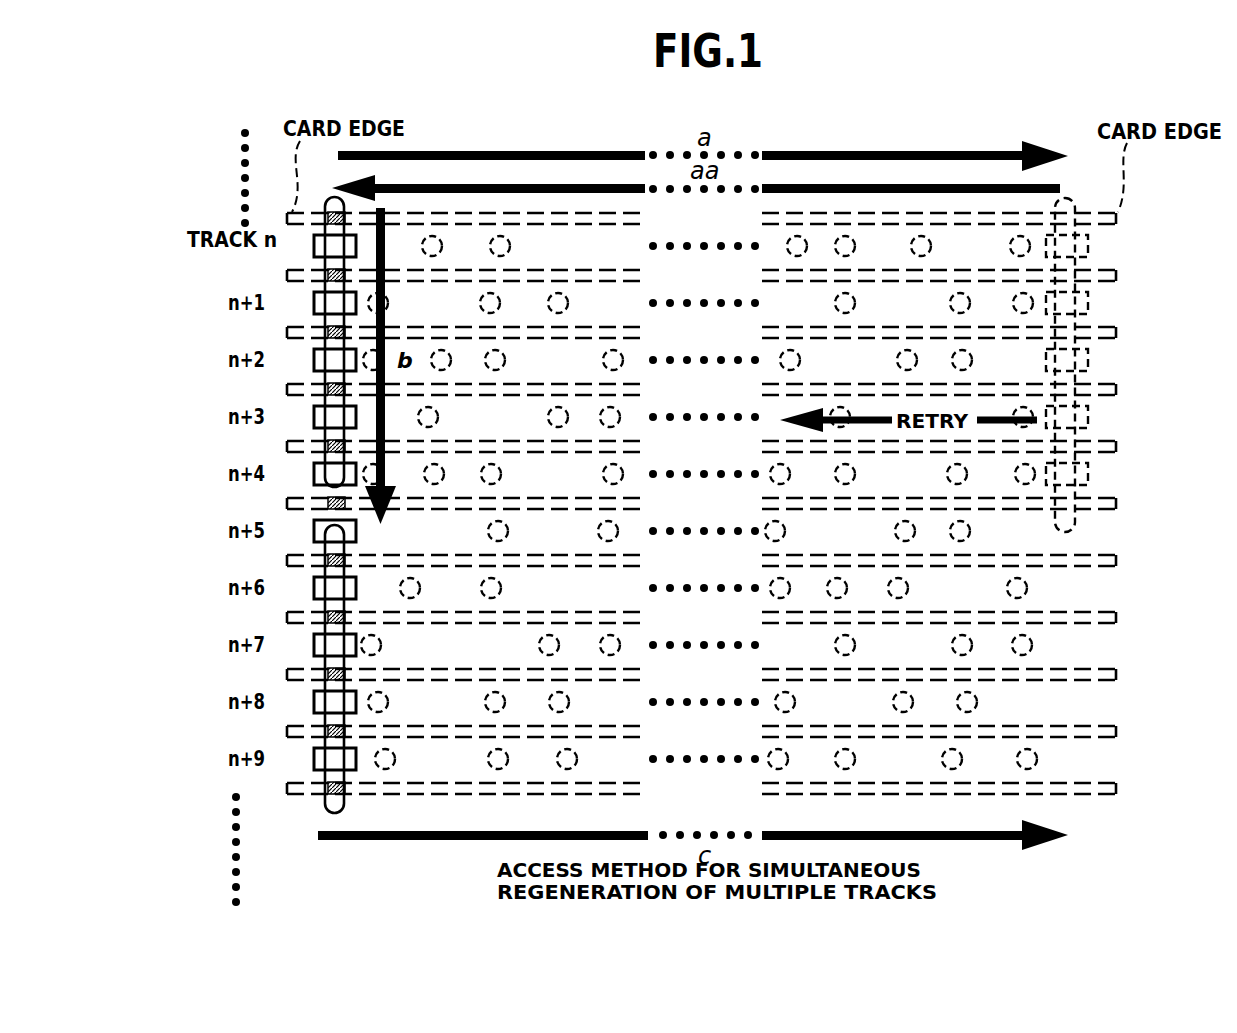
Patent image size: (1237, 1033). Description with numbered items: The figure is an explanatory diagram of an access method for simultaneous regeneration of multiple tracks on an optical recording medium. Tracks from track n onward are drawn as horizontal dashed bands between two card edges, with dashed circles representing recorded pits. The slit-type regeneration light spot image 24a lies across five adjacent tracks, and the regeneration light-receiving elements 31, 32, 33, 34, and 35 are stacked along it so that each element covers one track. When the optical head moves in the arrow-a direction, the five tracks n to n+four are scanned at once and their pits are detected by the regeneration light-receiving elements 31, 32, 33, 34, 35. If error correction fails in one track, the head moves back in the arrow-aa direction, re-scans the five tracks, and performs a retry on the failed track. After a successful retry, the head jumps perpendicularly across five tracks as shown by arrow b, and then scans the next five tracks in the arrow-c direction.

The spot image 24a is at (315, 406).
The regeneration light-receiving element 31 is at (314, 243).
The regeneration light-receiving element 32 is at (314, 591).
The regeneration light-receiving element 33 is at (314, 648).
The regeneration light-receiving element 34 is at (314, 705).
The regeneration light-receiving element 35 is at (314, 762).